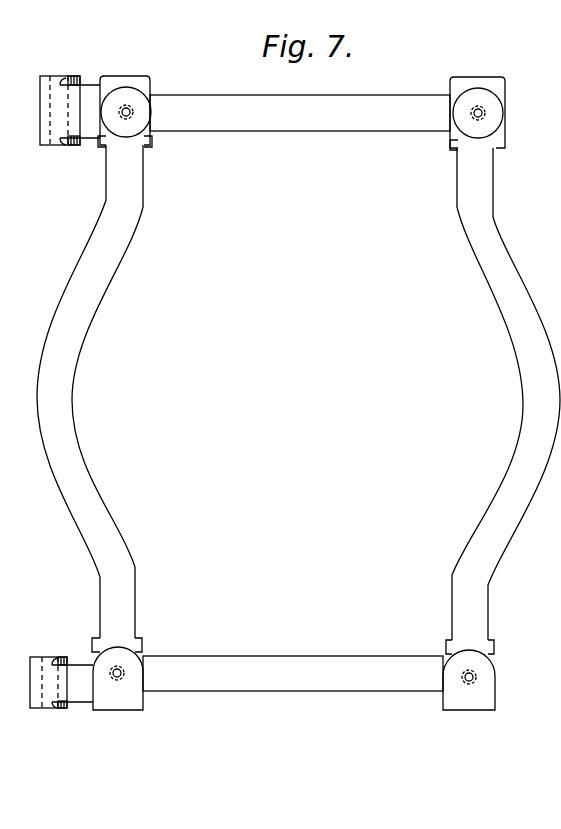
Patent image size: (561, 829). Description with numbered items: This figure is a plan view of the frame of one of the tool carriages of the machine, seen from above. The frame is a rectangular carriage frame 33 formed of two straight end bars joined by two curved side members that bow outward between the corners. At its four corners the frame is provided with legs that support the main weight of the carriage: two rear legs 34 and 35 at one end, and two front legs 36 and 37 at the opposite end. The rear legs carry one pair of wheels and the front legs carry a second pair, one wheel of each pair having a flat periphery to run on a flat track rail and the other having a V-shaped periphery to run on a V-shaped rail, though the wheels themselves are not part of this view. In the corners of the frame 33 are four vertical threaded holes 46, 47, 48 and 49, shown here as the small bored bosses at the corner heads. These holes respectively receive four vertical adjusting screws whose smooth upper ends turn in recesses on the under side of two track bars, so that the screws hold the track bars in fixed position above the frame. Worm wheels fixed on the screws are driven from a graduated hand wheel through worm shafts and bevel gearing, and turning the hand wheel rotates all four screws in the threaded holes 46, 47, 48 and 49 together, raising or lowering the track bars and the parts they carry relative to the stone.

The rectangular carriage frame 33 is at (73, 436).
The rear leg 34 is at (152, 143).
The rear leg 35 is at (143, 646).
The front leg 36 is at (437, 153).
The front leg 37 is at (447, 646).
The vertical threaded hole 46 is at (130, 110).
The vertical threaded hole 47 is at (117, 680).
The vertical threaded hole 48 is at (483, 113).
The vertical threaded hole 49 is at (469, 684).